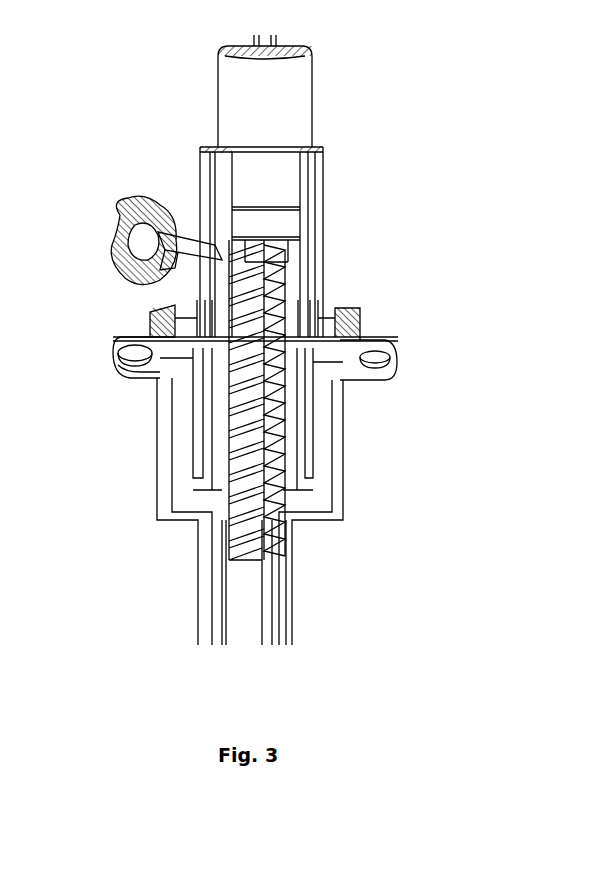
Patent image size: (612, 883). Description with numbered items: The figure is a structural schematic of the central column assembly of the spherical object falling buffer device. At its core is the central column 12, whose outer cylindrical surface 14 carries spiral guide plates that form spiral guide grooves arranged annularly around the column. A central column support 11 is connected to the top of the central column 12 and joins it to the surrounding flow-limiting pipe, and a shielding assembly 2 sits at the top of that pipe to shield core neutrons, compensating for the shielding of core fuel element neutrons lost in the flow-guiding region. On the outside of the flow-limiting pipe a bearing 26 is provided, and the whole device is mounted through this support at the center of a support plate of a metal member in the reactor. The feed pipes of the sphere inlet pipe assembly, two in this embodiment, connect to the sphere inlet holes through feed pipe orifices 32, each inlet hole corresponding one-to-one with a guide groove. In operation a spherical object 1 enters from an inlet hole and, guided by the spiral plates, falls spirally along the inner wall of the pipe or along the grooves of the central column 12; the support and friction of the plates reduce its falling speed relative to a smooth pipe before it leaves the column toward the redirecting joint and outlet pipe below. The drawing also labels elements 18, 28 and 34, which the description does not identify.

The spherical object 1 is at (253, 302).
The shielding assembly 2 is at (282, 88).
The central column support 11 is at (287, 225).
The central column 12 is at (258, 273).
The outer cylindrical surface 14 is at (262, 350).
The outer housing 18 is at (233, 383).
The bearing 26 is at (283, 260).
The mounting hole 28 is at (135, 353).
The feed pipe orifices 32 is at (168, 212).
The connecting arm 34 is at (208, 252).